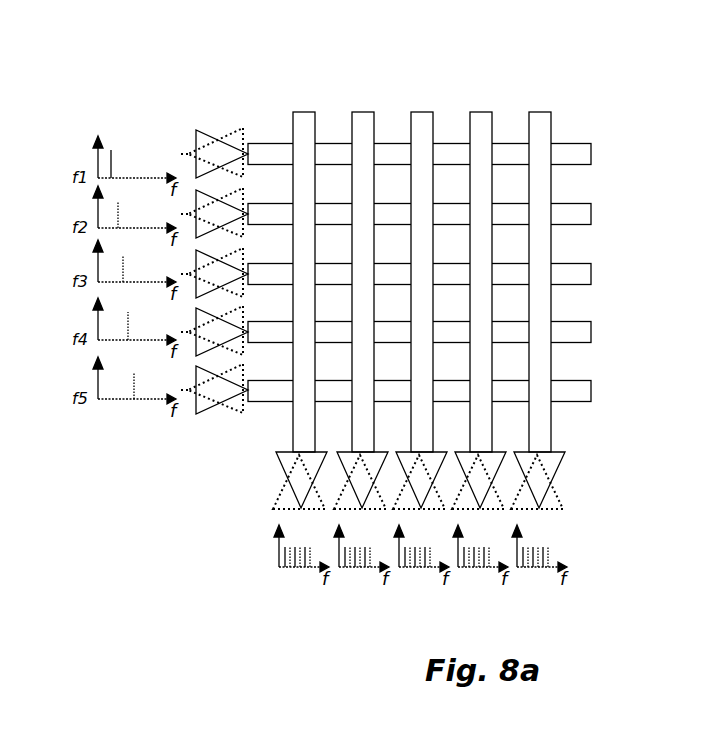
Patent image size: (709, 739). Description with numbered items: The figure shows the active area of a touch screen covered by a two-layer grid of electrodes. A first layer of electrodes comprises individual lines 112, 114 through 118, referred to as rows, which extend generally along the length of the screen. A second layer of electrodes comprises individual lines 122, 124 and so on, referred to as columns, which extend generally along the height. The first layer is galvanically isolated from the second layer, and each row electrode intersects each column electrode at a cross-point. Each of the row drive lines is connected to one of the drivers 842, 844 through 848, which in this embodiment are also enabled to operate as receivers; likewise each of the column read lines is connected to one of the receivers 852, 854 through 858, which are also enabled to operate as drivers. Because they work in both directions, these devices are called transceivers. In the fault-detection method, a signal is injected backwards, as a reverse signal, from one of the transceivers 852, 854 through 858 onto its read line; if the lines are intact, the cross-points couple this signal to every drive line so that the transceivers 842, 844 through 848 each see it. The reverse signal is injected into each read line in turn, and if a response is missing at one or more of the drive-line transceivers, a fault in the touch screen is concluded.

The line 112 is at (590, 148).
The line 114 is at (590, 213).
The line 118 is at (587, 390).
The line 122 is at (303, 112).
The line 124 is at (367, 112).
The driver 842 is at (207, 130).
The driver 844 is at (196, 195).
The driver 848 is at (198, 417).
The receiver 852 is at (281, 466).
The receiver 854 is at (350, 452).
The receiver 858 is at (553, 460).